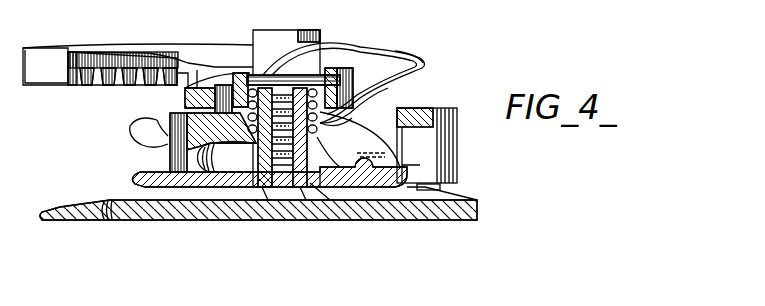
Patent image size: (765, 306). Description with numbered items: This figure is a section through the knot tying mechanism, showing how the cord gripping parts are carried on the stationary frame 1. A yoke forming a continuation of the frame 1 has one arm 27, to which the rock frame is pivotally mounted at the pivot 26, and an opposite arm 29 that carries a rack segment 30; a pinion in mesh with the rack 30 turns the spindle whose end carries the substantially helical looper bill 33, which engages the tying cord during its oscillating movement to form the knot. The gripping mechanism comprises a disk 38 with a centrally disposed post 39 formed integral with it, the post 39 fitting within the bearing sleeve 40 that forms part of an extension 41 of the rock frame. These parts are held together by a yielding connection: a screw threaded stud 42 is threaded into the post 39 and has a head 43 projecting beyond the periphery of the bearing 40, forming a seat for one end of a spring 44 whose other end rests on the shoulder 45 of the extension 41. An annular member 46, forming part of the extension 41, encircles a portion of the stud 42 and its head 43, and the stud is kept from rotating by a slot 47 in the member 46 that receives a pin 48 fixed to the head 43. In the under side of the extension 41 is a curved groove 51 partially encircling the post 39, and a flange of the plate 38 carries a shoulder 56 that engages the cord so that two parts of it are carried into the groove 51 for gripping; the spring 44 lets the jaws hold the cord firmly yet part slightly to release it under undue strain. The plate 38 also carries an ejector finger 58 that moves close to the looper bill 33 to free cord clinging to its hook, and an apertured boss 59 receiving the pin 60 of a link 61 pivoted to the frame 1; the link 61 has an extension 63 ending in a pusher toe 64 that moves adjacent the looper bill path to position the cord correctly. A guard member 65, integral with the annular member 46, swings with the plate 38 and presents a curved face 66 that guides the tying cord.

The frame 1 is at (395, 224).
The pivot 26 is at (256, 32).
The arm 27 is at (149, 47).
The arm 29 is at (45, 66).
The rack segment 30 is at (87, 86).
The looper bill 33 is at (290, 77).
The disk 38 is at (312, 175).
The post 39 is at (280, 187).
The bearing sleeve 40 is at (255, 188).
The extension 41 is at (172, 110).
The screw threaded stud 42 is at (289, 88).
The head 43 is at (296, 76).
The spring 44 is at (350, 113).
The shoulder 45 is at (298, 188).
The annular member 46 is at (342, 62).
The slot 47 is at (350, 66).
The pin 48 is at (327, 72).
The groove 51 is at (157, 120).
The shoulder 56 is at (168, 136).
The ejector finger 58 is at (365, 142).
The apertured boss 59 is at (443, 137).
The pin 60 is at (440, 188).
The link 61 is at (420, 107).
The extension 63 is at (188, 80).
The pusher toe 64 is at (219, 72).
The guard member 65 is at (398, 51).
The curved face 66 is at (340, 122).